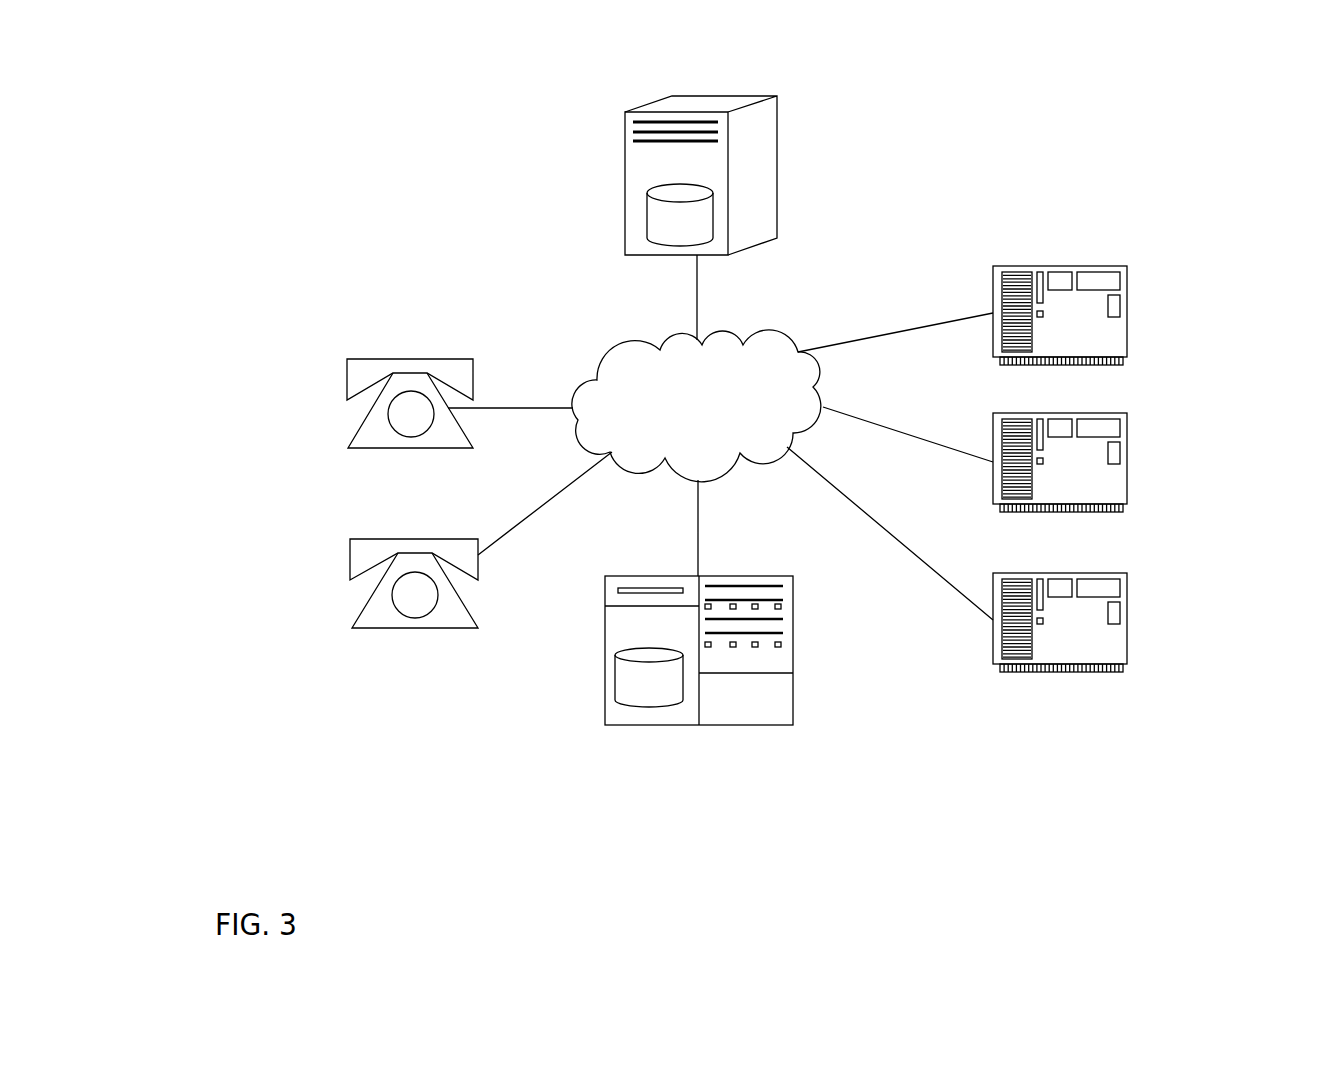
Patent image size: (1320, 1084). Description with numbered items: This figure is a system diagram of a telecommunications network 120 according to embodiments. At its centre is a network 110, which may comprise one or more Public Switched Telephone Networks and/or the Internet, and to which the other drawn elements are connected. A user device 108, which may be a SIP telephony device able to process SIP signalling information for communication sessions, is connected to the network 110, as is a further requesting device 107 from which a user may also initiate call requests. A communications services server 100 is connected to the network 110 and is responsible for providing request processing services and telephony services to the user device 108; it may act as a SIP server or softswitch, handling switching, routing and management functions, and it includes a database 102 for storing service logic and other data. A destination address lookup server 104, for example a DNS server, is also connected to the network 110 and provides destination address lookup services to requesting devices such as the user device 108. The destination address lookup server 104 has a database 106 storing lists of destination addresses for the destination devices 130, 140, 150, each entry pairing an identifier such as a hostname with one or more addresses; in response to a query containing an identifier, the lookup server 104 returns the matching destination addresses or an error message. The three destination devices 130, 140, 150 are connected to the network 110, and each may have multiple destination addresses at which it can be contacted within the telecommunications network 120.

The communications services server 100 is at (772, 185).
The database 102 is at (680, 215).
The destination address lookup server 104 is at (790, 654).
The database 106 is at (649, 677).
The requesting device 107 is at (352, 568).
The user device 108 is at (348, 388).
The network 110 is at (615, 362).
The telecommunications network 120 is at (143, 91).
The destination device 130 is at (1123, 331).
The destination device 140 is at (1123, 478).
The destination device 150 is at (1123, 638).